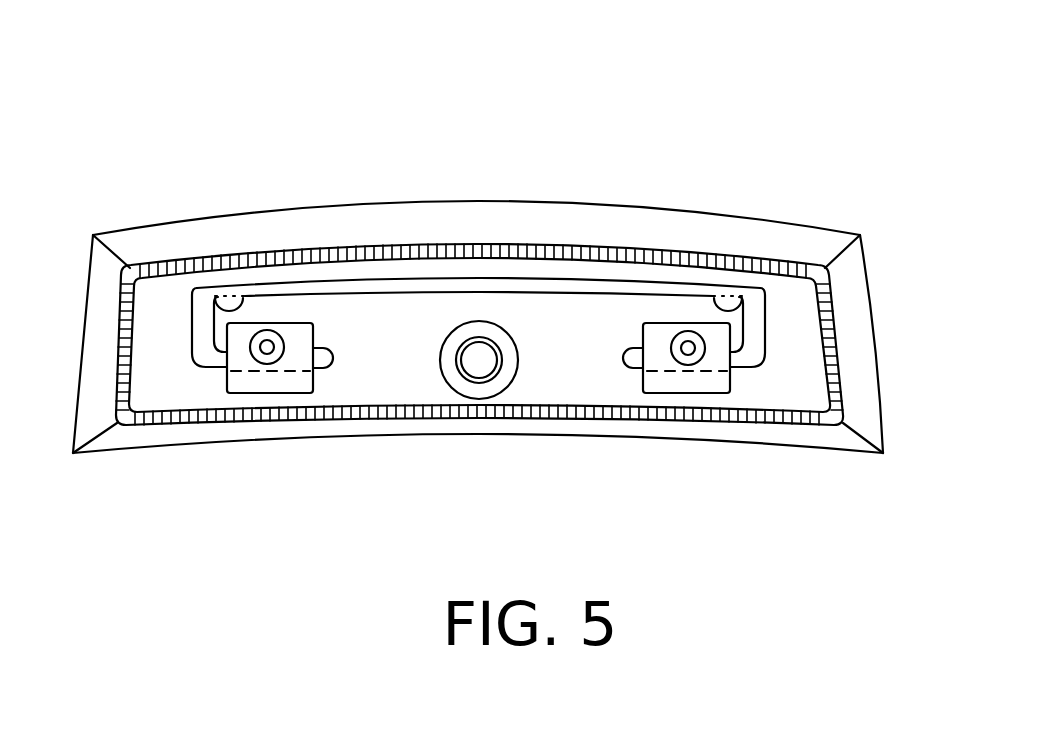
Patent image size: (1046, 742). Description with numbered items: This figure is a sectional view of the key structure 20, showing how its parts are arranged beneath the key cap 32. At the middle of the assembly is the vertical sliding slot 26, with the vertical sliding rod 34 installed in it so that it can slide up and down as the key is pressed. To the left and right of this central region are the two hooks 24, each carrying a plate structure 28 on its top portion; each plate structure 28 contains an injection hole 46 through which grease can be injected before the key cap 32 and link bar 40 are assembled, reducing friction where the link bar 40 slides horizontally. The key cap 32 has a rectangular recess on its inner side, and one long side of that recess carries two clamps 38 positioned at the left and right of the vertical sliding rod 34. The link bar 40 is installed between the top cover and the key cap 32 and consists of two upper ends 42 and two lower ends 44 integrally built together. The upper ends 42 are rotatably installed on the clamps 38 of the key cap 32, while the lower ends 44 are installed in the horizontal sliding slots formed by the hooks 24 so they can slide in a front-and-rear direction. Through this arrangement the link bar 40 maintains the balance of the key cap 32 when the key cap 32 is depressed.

The key structure 20 is at (772, 108).
The hook 24 is at (268, 383).
The vertical sliding slot 26 is at (503, 375).
The plate structure 28 is at (297, 358).
The key cap 32 is at (398, 375).
The vertical sliding rod 34 is at (477, 360).
The clamp 38 is at (232, 292).
The link bar 40 is at (448, 285).
The upper end 42 is at (203, 300).
The lower end 44 is at (217, 357).
The injection hole 46 is at (276, 338).